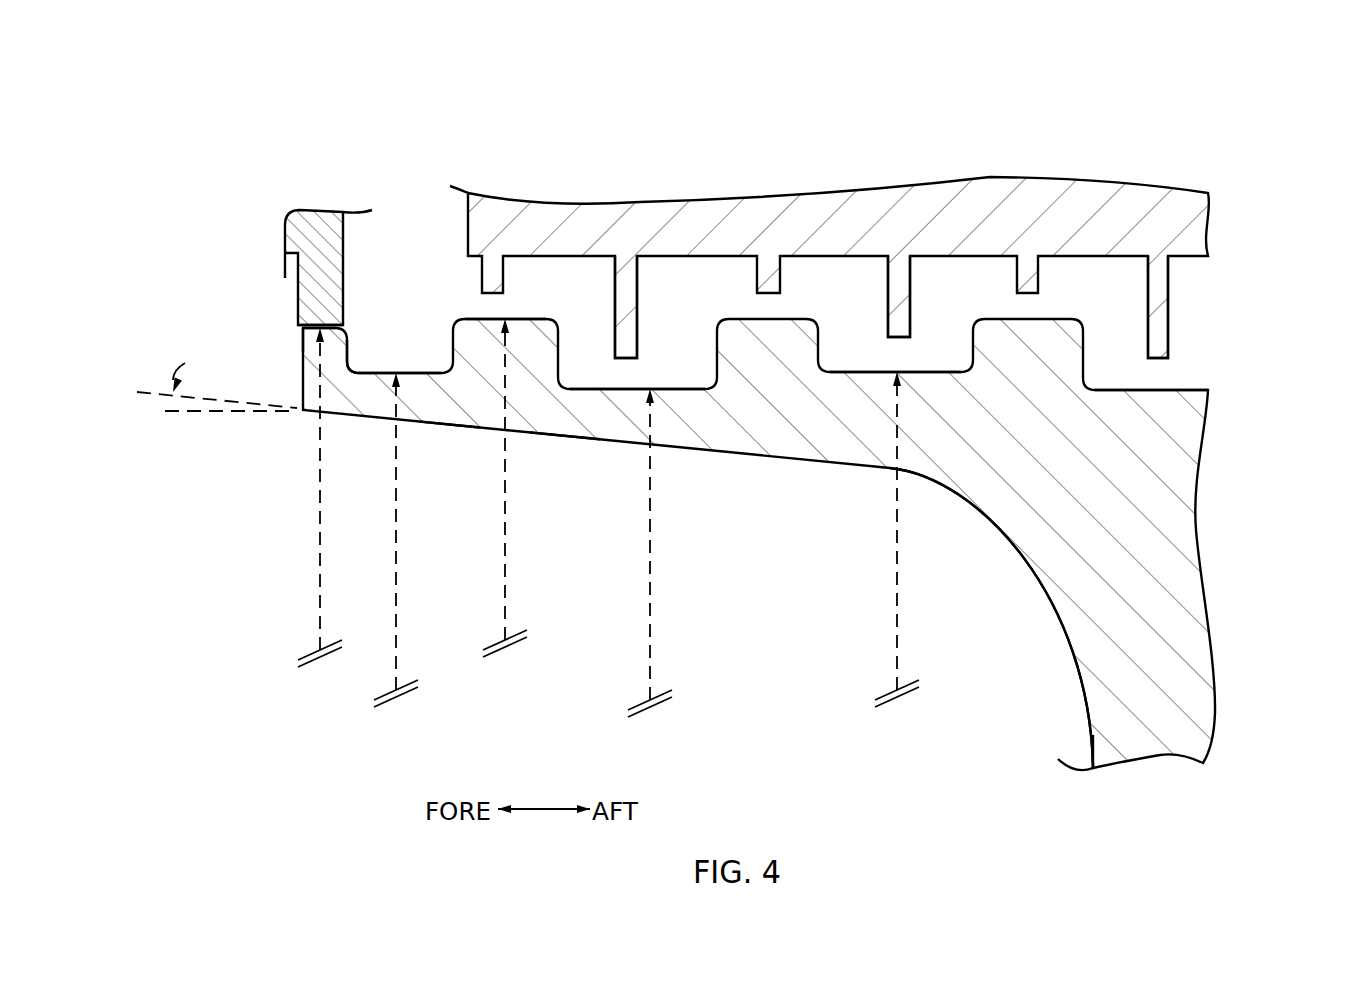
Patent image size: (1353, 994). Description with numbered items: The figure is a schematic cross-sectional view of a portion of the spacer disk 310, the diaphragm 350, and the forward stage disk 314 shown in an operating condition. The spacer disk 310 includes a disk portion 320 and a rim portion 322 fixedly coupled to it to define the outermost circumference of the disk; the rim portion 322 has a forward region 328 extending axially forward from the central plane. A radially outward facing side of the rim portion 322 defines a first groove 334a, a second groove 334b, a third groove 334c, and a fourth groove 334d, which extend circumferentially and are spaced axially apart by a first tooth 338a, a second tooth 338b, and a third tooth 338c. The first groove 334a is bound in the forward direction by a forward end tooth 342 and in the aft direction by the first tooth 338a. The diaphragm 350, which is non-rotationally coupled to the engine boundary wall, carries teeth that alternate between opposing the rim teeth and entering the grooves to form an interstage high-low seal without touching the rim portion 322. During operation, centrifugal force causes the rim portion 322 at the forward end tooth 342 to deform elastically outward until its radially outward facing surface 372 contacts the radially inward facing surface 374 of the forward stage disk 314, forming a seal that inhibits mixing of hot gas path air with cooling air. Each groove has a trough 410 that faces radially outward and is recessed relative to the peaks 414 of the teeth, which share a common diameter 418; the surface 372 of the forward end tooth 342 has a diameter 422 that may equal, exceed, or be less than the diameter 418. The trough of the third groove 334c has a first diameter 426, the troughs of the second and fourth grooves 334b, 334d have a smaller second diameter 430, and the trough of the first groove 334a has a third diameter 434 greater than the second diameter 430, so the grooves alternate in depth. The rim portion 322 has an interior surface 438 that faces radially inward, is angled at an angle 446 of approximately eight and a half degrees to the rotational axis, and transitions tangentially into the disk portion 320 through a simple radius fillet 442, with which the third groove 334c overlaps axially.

The spacer disk 310 is at (776, 478).
The forward stage disk 314 is at (308, 207).
The disk portion 320 is at (1090, 735).
The rim portion 322 is at (563, 437).
The forward region 328 is at (596, 483).
The first groove 334a is at (393, 373).
The second groove 334b is at (688, 390).
The third groove 334c is at (852, 372).
The fourth groove 334d is at (1133, 390).
The first tooth 338a is at (538, 357).
The second tooth 338b is at (790, 332).
The third tooth 338c is at (1050, 342).
The forward end tooth 342 is at (312, 340).
The diaphragm 350 is at (1190, 155).
The radially outward facing surface 372 is at (322, 325).
The radially inward facing surface 374 is at (310, 328).
The trough 410 is at (392, 374).
The peak 414 is at (472, 319).
The diameter 418 is at (503, 613).
The diameter 422 is at (317, 487).
The first diameter 426 is at (895, 645).
The second diameter 430 is at (650, 645).
The third diameter 434 is at (392, 632).
The interior surface 438 is at (452, 425).
The fillet 442 is at (1060, 610).
The angle 446 is at (170, 424).